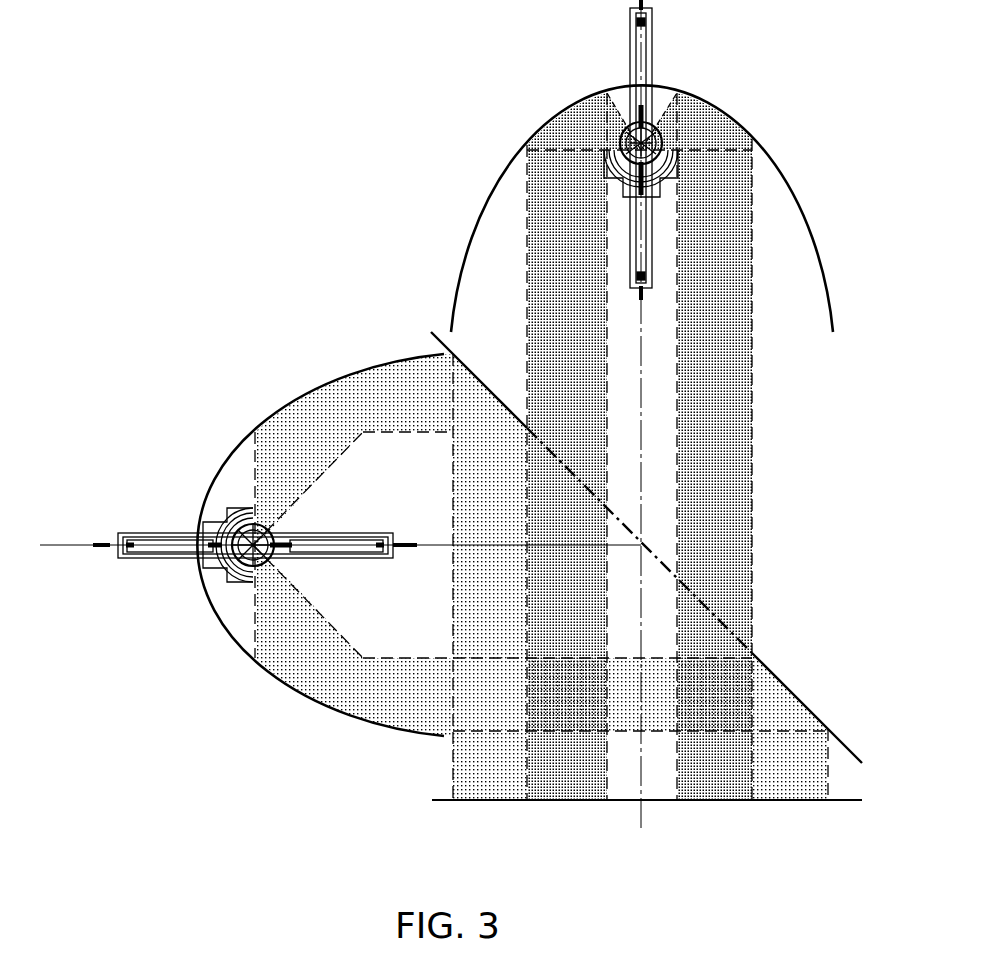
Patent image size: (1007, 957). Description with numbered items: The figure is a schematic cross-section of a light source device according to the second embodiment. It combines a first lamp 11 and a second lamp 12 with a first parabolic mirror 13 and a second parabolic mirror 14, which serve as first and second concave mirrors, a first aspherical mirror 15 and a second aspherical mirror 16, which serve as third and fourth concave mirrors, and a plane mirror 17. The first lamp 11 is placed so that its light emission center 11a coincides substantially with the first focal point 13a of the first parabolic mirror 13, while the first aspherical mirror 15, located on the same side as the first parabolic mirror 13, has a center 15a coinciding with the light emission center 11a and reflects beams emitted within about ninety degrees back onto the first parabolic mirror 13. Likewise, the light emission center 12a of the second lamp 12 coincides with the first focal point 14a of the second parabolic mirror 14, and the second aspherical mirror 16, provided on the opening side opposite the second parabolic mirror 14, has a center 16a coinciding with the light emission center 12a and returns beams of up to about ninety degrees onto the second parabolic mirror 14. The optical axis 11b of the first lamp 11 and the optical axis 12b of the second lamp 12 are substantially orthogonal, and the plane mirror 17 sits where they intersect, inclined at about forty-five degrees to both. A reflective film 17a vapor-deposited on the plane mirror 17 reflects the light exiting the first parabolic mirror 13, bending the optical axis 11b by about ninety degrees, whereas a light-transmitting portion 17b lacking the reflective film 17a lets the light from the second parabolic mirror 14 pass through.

The first lamp 11 is at (248, 544).
The light emission center 11a is at (247, 518).
The optical axis 11b is at (483, 547).
The second lamp 12 is at (721, 150).
The light emission center 12a is at (758, 82).
The optical axis 12b is at (642, 384).
The first parabolic mirror 13 is at (343, 375).
The first focal point 13a is at (247, 518).
The second parabolic mirror 14 is at (558, 115).
The first focal point 14a is at (662, 134).
The first aspherical mirror 15 is at (233, 583).
The center 15a is at (247, 518).
The second aspherical mirror 16 is at (683, 182).
The center 16a is at (662, 134).
The plane mirror 17 is at (808, 709).
The reflective film 17a is at (475, 373).
The light-transmitting portion 17b is at (706, 601).